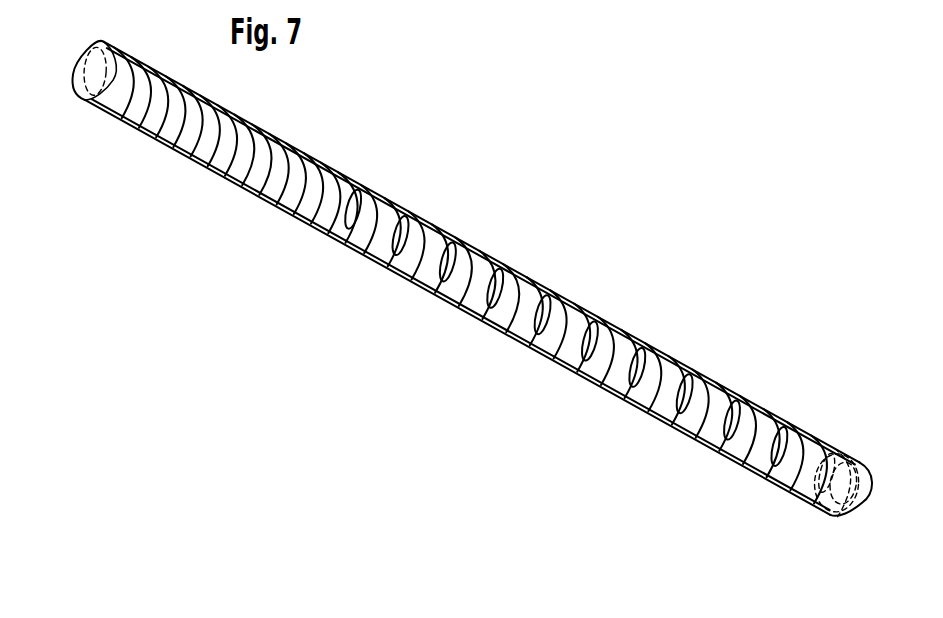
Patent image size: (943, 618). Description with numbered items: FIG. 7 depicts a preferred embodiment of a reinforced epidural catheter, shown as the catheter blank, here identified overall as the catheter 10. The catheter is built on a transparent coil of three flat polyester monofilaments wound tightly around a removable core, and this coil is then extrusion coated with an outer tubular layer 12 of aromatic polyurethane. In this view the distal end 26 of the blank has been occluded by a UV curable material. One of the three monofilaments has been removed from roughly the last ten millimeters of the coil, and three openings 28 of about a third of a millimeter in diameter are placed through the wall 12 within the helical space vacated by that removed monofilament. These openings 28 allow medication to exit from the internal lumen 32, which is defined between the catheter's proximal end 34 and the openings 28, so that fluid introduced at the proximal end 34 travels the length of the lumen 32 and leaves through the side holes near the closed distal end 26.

The catheter 10 is at (598, 250).
The outer tubular layer 12 is at (327, 162).
The distal end 26 is at (860, 527).
The openings 28 is at (368, 183).
The internal lumen 32 is at (408, 272).
The proximal end 34 is at (73, 103).